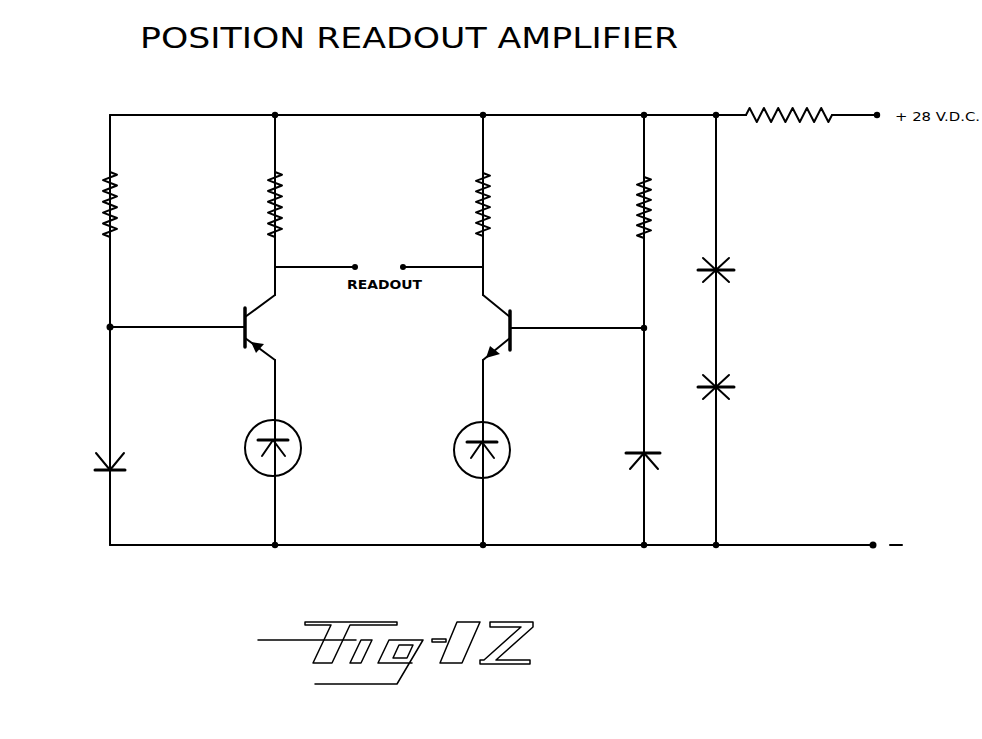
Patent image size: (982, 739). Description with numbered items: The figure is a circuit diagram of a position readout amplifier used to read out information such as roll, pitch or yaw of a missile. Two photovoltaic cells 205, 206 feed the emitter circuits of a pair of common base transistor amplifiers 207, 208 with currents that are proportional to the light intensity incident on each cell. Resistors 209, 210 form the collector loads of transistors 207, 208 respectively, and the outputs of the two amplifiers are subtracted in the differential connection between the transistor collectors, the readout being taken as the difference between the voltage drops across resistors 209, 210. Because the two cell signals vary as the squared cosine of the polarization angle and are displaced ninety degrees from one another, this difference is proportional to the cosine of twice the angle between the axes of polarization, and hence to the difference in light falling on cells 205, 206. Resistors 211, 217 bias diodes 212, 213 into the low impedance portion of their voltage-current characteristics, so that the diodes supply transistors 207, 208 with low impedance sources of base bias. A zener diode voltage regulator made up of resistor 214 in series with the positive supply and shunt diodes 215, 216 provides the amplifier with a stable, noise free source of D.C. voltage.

The photovoltaic cell 205 is at (264, 455).
The photovoltaic cell 206 is at (490, 456).
The common base transistor amplifier 207 is at (241, 327).
The common base transistor amplifier 208 is at (514, 327).
The collector load resistor 209 is at (290, 204).
The collector load resistor 210 is at (499, 204).
The bias resistor 211 is at (125, 204).
The diode 212 is at (120, 471).
The diode 213 is at (656, 461).
The resistor 214 is at (789, 126).
The zener diode 215 is at (731, 270).
The zener diode 216 is at (729, 387).
The bias resistor 217 is at (660, 207).